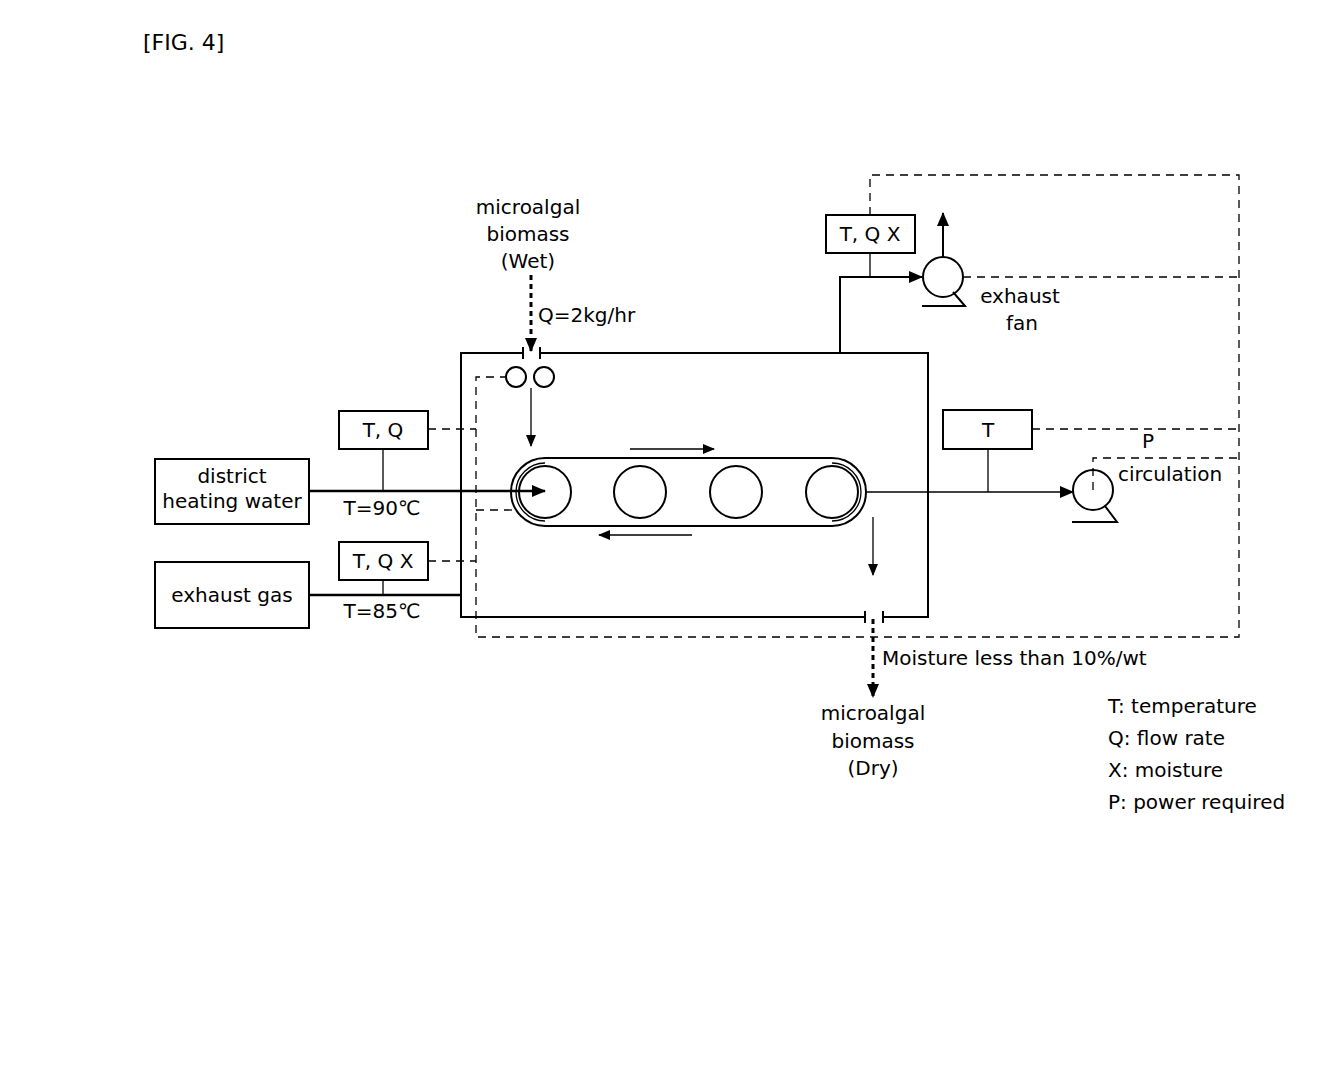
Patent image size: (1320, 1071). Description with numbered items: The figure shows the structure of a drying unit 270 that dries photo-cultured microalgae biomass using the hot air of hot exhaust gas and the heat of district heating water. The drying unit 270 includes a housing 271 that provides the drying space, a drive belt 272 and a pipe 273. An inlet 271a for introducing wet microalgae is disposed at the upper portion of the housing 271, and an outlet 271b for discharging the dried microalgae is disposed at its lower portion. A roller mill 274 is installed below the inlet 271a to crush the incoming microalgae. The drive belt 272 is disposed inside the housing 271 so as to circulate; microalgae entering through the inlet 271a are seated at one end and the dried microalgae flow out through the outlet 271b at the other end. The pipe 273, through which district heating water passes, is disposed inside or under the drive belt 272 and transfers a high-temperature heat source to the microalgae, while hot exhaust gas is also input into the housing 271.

The drying unit 270 is at (208, 162).
The housing 271 is at (735, 352).
The inlet 271a is at (524, 350).
The outlet 271b is at (885, 614).
The drive belt 272 is at (808, 457).
The pipe 273 is at (615, 508).
The roller mill 274 is at (505, 383).